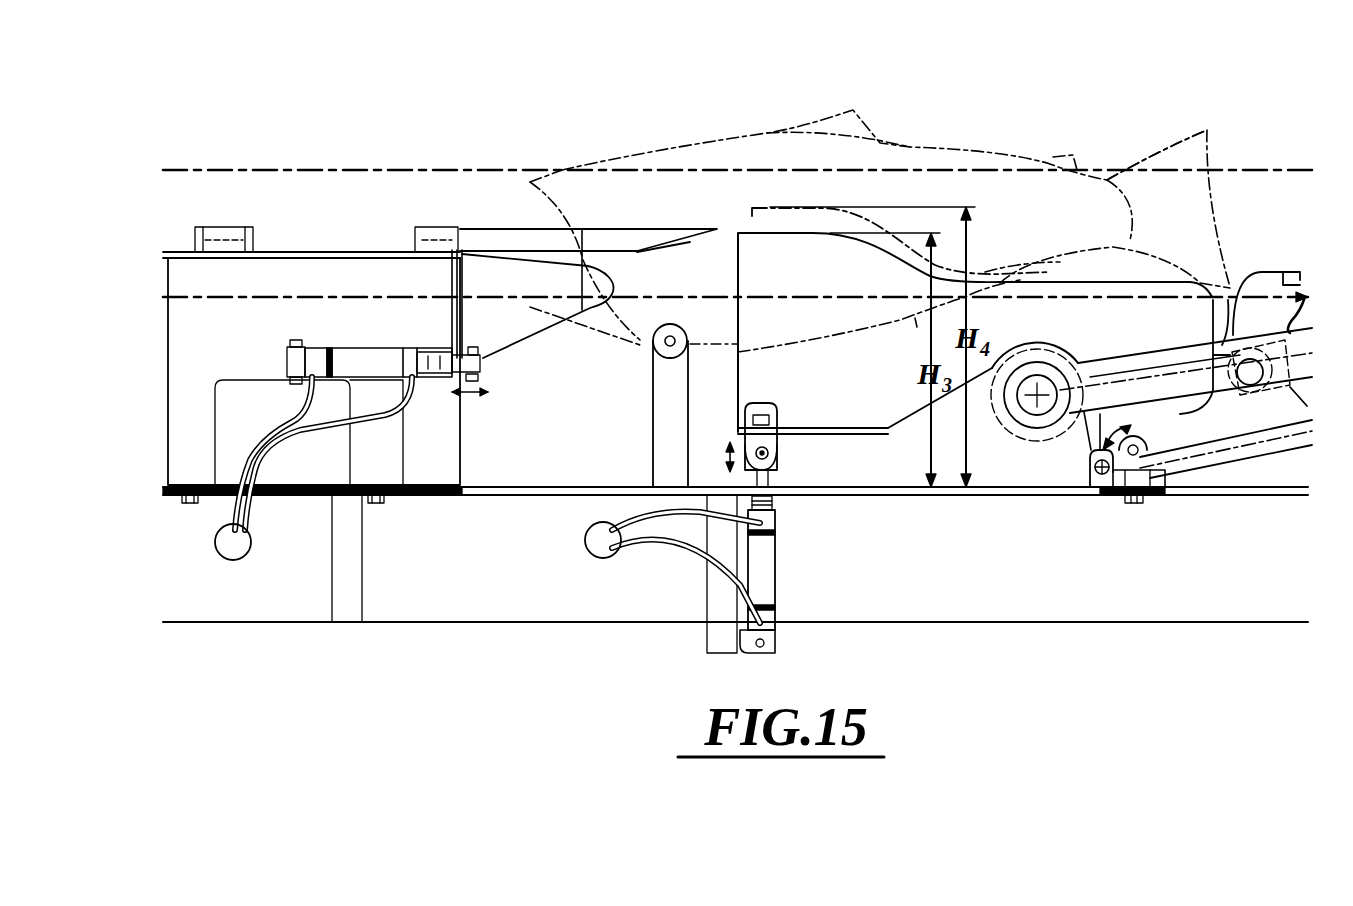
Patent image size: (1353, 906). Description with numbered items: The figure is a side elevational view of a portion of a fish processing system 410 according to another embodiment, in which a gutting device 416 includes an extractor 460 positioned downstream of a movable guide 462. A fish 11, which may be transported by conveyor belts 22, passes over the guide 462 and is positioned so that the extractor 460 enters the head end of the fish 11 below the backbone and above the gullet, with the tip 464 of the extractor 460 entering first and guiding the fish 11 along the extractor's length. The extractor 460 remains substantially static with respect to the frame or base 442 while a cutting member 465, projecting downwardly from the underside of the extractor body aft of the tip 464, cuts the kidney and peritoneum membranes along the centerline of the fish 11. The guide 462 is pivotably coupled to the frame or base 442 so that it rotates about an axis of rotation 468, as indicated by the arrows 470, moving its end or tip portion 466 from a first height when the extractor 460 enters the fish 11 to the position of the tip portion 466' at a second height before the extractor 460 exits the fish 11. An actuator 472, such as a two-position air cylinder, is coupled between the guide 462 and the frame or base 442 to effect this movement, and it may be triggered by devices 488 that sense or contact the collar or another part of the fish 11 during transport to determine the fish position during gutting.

The fish 11 is at (915, 147).
The conveyor belts 22 is at (330, 170).
The fish processing system 410 is at (957, 72).
The gutting device 416 is at (1016, 132).
The frame or base 442 is at (208, 497).
The extractor 460 is at (590, 235).
The movable guide 462 is at (994, 352).
The tip of the extractor 464 is at (717, 229).
The cutting member 465 is at (673, 248).
The end or tip portion of the guide 466 is at (944, 332).
The end or tip portion of the guide (moved position) 466' is at (901, 223).
The axis of rotation 468 is at (1138, 500).
The arrows 470 is at (1090, 437).
The actuator 472 is at (770, 560).
The devices 488 is at (670, 341).